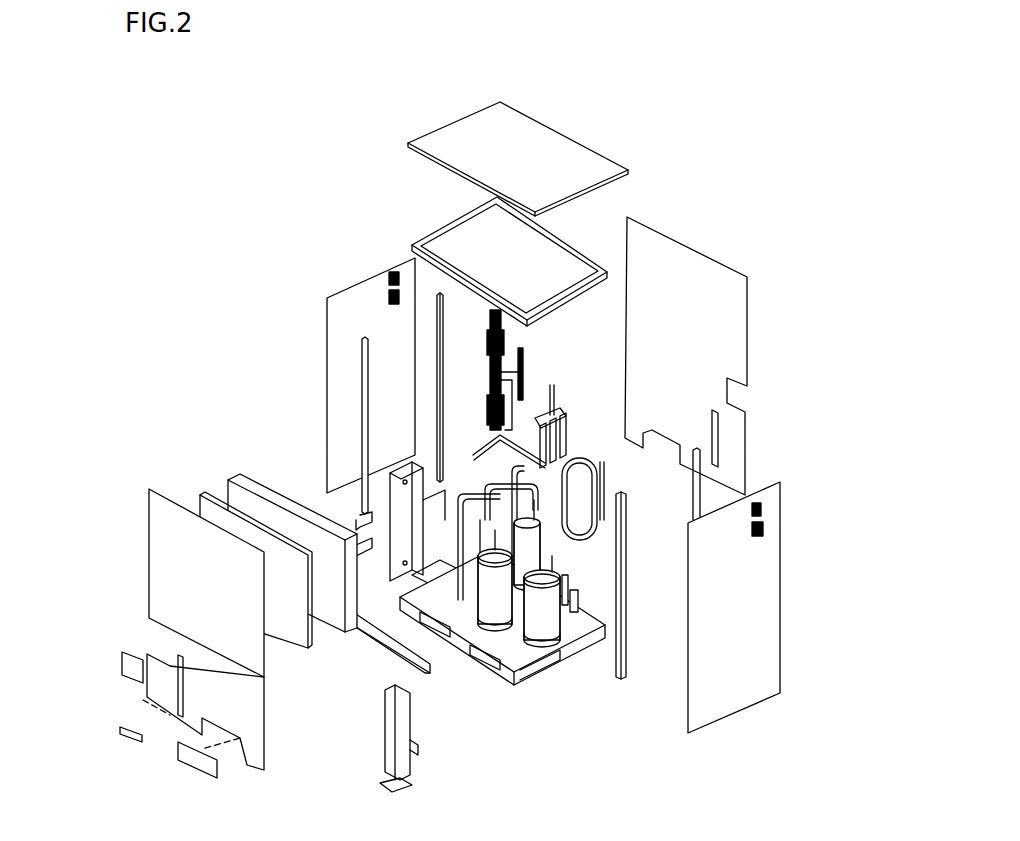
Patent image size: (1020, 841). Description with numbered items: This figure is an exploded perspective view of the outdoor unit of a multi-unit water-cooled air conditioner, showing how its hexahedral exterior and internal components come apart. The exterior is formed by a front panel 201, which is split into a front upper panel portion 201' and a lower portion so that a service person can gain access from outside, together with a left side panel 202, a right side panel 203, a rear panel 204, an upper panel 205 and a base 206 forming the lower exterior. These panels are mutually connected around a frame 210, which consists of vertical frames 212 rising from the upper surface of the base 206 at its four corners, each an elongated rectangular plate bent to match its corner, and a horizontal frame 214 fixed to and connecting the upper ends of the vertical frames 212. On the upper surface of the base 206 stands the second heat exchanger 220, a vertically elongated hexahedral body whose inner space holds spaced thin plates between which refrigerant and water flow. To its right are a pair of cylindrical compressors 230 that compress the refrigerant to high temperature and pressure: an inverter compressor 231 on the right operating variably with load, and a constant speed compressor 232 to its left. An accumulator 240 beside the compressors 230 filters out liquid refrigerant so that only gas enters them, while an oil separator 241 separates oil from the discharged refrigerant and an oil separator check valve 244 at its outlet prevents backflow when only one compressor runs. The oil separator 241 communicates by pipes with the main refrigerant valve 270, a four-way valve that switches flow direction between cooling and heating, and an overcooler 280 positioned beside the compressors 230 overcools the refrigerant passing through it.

The front panel 201 is at (184, 626).
The front upper panel portion 201' is at (165, 583).
The left side panel 202 is at (352, 313).
The right side panel 203 is at (767, 585).
The rear panel 204 is at (733, 285).
The upper panel 205 is at (563, 150).
The base 206 is at (562, 648).
The frame 210 is at (312, 183).
The vertical frames 212 is at (437, 293).
The horizontal frame 214 is at (420, 241).
The second heat exchanger 220 is at (393, 580).
The compressors 230 is at (442, 754).
The inverter compressor 231 is at (537, 627).
The constant speed compressor 232 is at (485, 602).
The accumulator 240 is at (533, 528).
The oil separator 241 is at (476, 628).
The oil separator check valve 244 is at (443, 487).
The main refrigerant valve 270 is at (562, 422).
The overcooler 280 is at (533, 362).